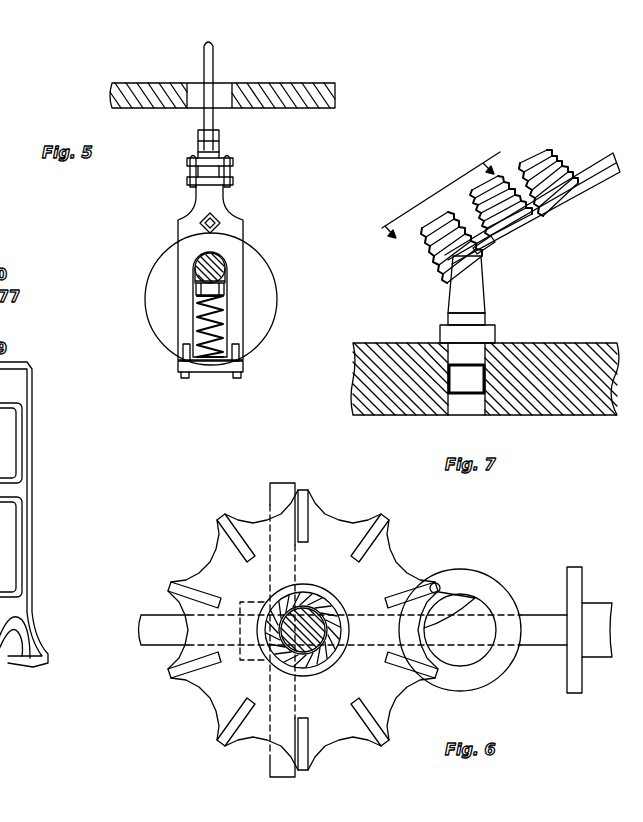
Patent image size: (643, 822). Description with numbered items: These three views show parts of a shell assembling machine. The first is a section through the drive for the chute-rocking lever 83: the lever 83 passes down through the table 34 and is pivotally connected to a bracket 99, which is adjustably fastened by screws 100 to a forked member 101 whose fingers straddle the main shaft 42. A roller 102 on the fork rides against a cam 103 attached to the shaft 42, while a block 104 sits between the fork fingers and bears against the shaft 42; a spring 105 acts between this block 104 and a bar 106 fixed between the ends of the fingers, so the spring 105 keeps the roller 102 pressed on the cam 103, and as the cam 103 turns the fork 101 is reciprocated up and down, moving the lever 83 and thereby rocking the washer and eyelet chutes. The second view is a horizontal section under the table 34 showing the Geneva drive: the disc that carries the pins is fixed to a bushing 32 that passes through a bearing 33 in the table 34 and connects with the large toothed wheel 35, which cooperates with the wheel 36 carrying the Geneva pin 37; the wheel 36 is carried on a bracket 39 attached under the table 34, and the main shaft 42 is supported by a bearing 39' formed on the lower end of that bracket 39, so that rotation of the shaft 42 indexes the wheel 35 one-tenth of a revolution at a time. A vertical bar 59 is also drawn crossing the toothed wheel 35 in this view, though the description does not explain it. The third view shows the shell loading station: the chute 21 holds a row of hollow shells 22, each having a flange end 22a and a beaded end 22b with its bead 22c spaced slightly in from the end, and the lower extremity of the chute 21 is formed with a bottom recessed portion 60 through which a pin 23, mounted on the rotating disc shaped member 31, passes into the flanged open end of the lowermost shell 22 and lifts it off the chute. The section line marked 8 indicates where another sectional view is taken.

In FIG. 5, the lever 83 is at (212, 75).
In FIG. 5, the table 34 is at (329, 95).
In FIG. 6, the table 34 is at (311, 616).
In FIG. 5, the bracket 99 is at (218, 150).
In FIG. 5, the screws 100 is at (230, 172).
In FIG. 5, the forked member 101 is at (228, 254).
In FIG. 5, the roller 102 is at (217, 222).
In FIG. 5, the cam 103 is at (165, 322).
In FIG. 5, the main shaft 42 is at (196, 262).
In FIG. 6, the main shaft 42 is at (163, 647).
In FIG. 5, the block 104 is at (224, 288).
In FIG. 5, the spring 105 is at (216, 316).
In FIG. 5, the bar 106 is at (210, 372).
In FIG. 7, the chute 21 is at (592, 187).
In FIG. 7, the section line 8- 8 is at (438, 192).
In FIG. 7, the hollow shell 22 is at (531, 160).
In FIG. 7, the flange end 22a is at (446, 275).
In FIG. 7, the beaded end 22b is at (549, 156).
In FIG. 7, the bead 22c is at (562, 170).
In FIG. 7, the bottom recessed portion 60 is at (486, 252).
In FIG. 7, the pin 23 is at (463, 300).
In FIG. 7, the disc shaped member 31 is at (540, 357).
In FIG. 6, the large toothed wheel 35 is at (389, 563).
In FIG. 6, the bar 59 is at (273, 490).
In FIG. 6, the bearing 33 is at (341, 632).
In FIG. 6, the bushing 32 is at (326, 614).
In FIG. 6, the wheel 36 is at (482, 592).
In FIG. 6, the Geneva pin 37 is at (438, 584).
In FIG. 6, the bracket 39 is at (588, 630).
In FIG. 6, the bearing 39' is at (603, 643).